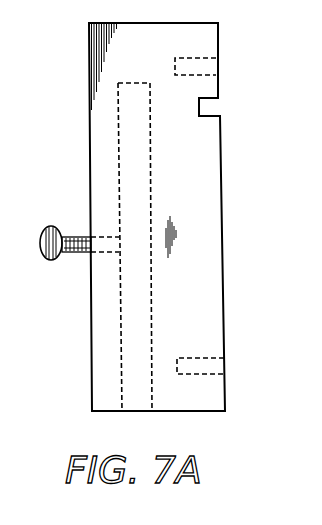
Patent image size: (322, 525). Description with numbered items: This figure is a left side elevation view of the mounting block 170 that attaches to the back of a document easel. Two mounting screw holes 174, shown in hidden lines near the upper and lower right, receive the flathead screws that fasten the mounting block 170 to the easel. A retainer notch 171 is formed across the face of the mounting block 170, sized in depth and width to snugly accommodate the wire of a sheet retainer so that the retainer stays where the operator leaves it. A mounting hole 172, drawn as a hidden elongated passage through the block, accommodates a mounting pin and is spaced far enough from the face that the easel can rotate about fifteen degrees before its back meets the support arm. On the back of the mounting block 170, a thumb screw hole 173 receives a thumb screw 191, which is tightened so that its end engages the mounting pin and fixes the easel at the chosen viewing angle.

The mounting block 170 is at (87, 66).
The retainer notch 171 is at (203, 108).
The mounting hole 172 is at (143, 302).
The thumb screw hole 173 is at (100, 237).
The mounting screw holes 174 is at (213, 57).
The thumb screw 191 is at (48, 259).